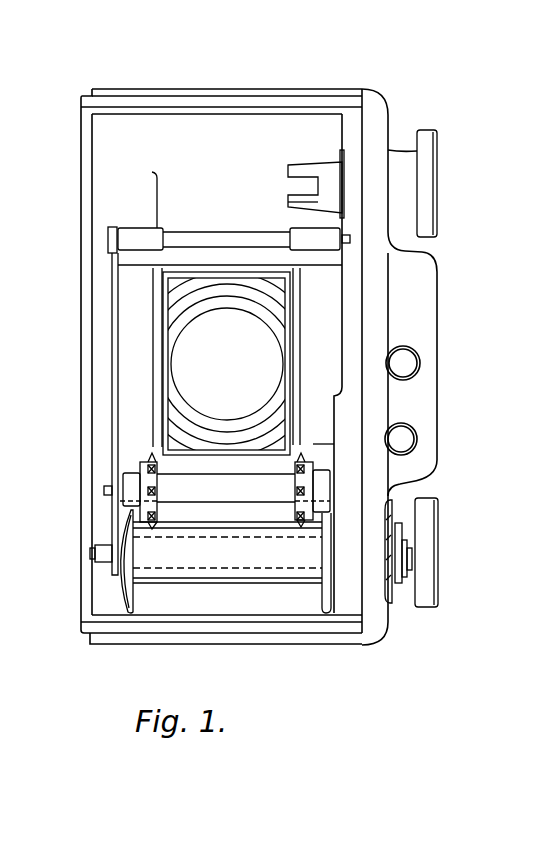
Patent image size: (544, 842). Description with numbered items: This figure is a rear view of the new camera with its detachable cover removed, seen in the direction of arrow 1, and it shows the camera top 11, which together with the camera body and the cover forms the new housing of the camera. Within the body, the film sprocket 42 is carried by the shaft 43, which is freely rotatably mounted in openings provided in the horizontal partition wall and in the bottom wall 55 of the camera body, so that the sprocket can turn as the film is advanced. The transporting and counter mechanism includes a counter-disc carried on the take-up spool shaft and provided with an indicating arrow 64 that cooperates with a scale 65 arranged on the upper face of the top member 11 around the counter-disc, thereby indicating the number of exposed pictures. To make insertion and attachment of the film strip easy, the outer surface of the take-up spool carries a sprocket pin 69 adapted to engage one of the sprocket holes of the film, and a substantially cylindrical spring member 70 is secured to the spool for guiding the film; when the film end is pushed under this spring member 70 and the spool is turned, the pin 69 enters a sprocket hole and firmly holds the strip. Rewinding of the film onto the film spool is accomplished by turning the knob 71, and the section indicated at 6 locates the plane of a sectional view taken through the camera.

The arrow 1 is at (538, 364).
The section line 6- 6 is at (182, 52).
The camera top 11 is at (378, 622).
The film sprocket 42 is at (175, 490).
The shaft 43 is at (126, 483).
The bottom wall 55 is at (112, 535).
The indicating arrow 64 is at (390, 513).
The scale 65 is at (392, 592).
The sprocket pin 69 is at (150, 556).
The spring member 70 is at (168, 583).
The knob 71 is at (433, 157).